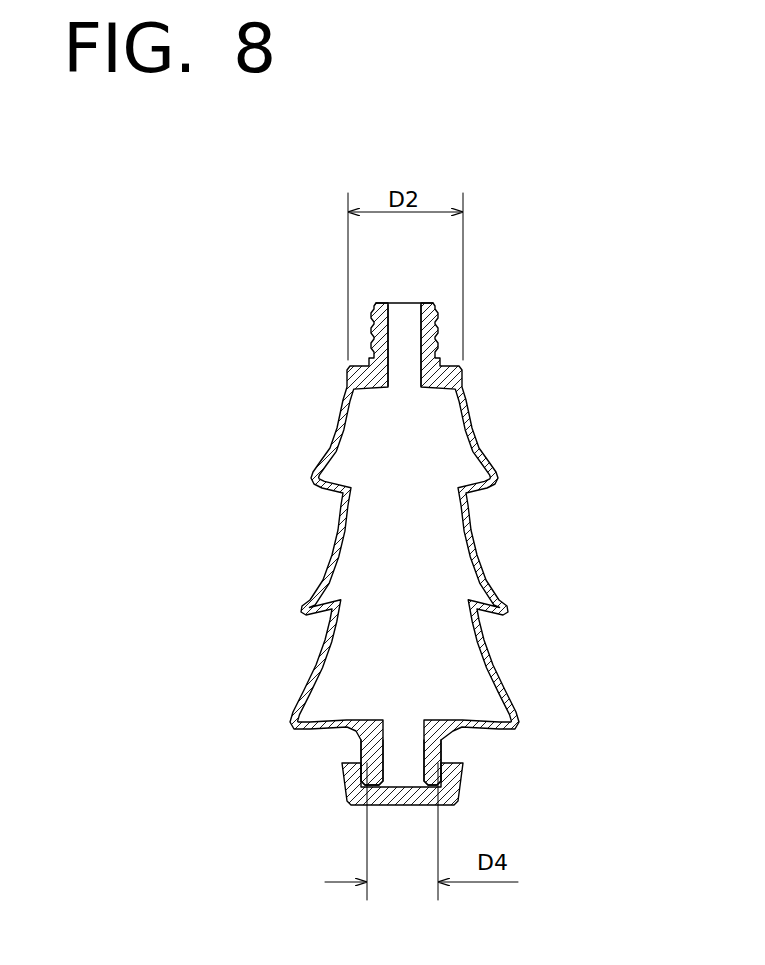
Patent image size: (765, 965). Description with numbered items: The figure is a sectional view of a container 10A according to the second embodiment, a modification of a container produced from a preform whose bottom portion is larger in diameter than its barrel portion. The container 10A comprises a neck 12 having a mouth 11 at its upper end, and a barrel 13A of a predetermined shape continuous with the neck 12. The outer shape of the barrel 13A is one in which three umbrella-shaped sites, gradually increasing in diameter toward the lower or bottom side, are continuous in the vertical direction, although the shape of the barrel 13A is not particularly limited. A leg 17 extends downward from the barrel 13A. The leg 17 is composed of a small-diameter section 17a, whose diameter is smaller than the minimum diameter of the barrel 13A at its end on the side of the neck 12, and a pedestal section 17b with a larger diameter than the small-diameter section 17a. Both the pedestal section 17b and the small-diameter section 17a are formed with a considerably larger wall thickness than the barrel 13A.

The container 10A is at (455, 470).
The mouth 11 is at (396, 328).
The neck 12 is at (377, 340).
The barrel 13A is at (475, 438).
The leg 17 is at (487, 772).
The small-diameter section 17a is at (443, 746).
The pedestal section 17b is at (443, 782).